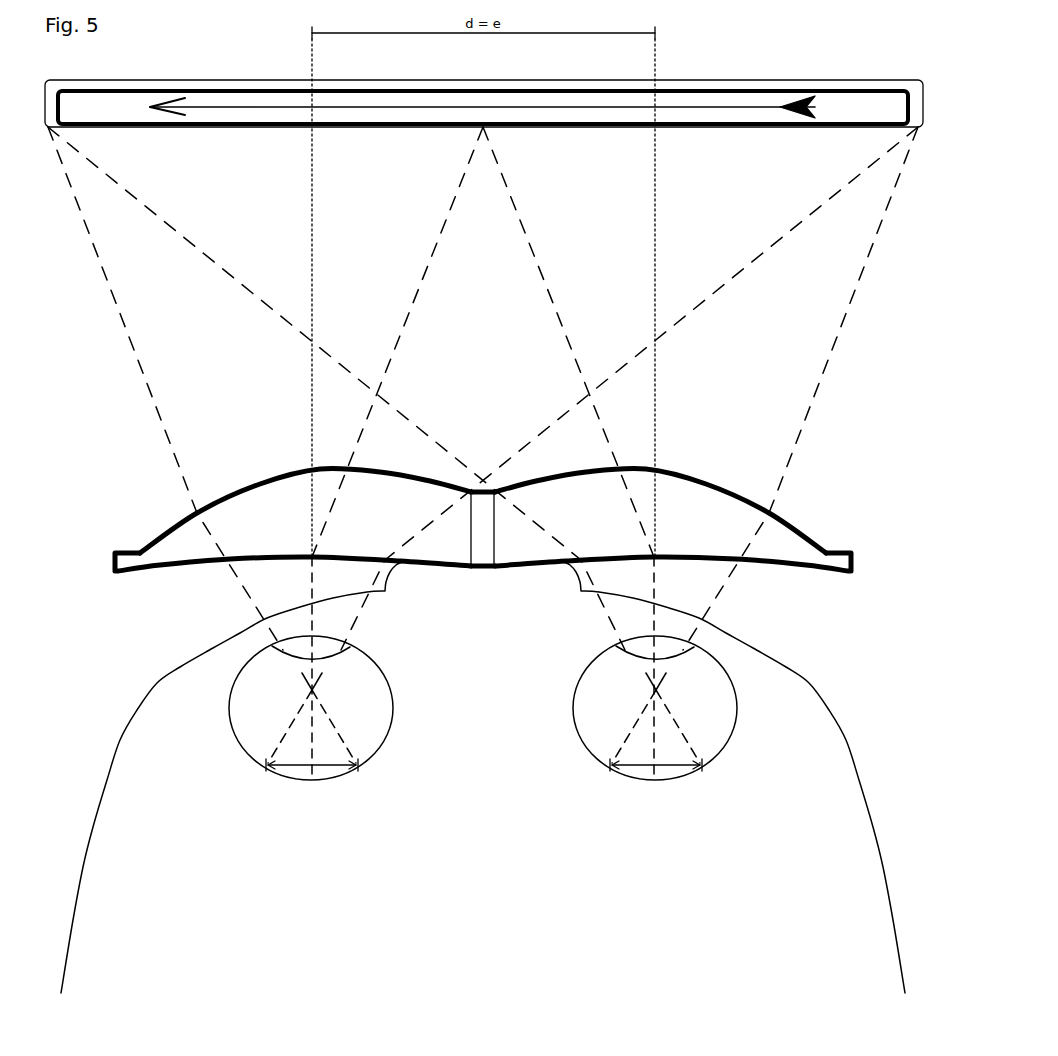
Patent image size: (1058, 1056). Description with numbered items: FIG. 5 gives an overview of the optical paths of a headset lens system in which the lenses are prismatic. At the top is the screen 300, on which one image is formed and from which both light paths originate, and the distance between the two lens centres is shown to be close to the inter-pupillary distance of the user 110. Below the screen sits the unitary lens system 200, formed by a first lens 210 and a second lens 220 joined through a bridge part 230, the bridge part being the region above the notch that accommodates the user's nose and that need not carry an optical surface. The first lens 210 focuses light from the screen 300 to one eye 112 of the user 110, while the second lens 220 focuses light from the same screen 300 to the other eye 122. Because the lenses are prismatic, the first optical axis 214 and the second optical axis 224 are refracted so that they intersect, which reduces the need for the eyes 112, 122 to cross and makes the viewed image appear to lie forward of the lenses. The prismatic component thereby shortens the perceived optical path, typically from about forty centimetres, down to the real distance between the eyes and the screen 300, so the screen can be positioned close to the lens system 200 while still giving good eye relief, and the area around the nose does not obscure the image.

The user 110 is at (483, 777).
The user's eye 112 is at (372, 708).
The user's eye 122 is at (594, 708).
The lens system 200 is at (485, 528).
The first lens 210 is at (262, 523).
The first optical axis 214 is at (360, 433).
The second lens 220 is at (706, 523).
The second optical axis 224 is at (606, 433).
The bridge part 230 is at (485, 574).
The screen 300 is at (928, 78).